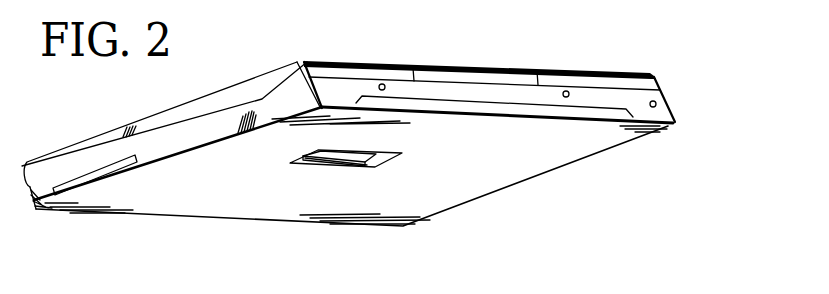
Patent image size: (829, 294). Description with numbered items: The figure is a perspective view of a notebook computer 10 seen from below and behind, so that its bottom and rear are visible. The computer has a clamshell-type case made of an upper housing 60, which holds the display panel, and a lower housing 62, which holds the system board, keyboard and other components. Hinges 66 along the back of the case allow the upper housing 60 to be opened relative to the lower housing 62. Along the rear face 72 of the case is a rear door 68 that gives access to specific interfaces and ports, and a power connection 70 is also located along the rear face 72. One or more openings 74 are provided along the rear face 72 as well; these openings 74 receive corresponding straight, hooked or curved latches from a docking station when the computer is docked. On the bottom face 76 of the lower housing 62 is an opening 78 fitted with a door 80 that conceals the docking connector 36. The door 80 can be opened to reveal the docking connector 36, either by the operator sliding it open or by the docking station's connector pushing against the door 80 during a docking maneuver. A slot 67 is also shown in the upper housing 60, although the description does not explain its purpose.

The notebook computer 10 is at (91, 102).
The docking connector 36 is at (314, 167).
The upper housing 60 is at (213, 103).
The lower housing 62 is at (33, 211).
The hinges 66 is at (395, 67).
The slot 67 is at (82, 180).
The rear door 68 is at (495, 107).
The power connection 70 is at (655, 108).
The rear face 72 is at (327, 91).
The openings 74 is at (381, 84).
The bottom face 76 is at (220, 198).
The opening 78 is at (367, 166).
The door 80 is at (362, 152).